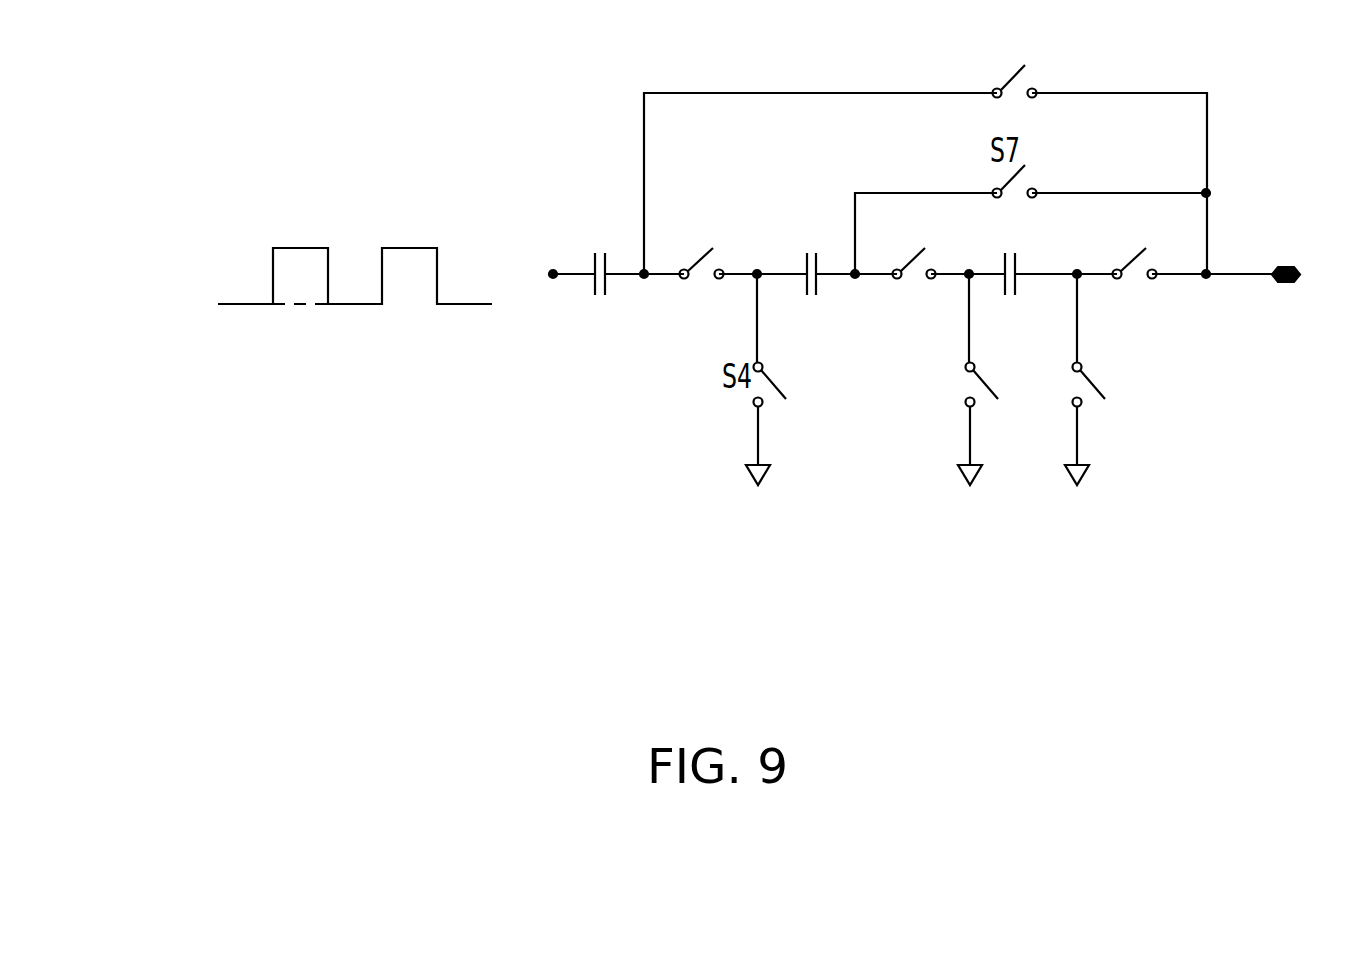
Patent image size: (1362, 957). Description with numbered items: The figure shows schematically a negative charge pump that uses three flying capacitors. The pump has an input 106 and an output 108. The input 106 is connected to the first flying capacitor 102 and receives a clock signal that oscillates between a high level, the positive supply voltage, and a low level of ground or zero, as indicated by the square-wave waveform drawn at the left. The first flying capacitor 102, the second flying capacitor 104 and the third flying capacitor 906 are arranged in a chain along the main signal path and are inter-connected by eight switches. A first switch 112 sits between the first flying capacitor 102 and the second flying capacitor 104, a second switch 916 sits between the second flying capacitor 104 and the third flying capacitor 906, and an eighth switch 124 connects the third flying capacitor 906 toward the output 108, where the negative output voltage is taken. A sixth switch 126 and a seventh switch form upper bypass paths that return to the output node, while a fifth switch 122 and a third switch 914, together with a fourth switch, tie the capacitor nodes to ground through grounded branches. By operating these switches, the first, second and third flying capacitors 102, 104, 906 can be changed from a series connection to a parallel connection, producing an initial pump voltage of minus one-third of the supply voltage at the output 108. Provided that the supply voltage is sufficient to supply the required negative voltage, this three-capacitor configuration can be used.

The first flying capacitor C1 102 is at (596, 310).
The second flying capacitor C2 104 is at (811, 274).
The third flying capacitor C3 906 is at (1011, 274).
The input 106 is at (340, 284).
The output 108 is at (1285, 275).
The switch S1 112 is at (697, 264).
The switch S2 916 is at (908, 264).
The switch S8 124 is at (1130, 264).
The switch S6 126 is at (1013, 83).
The switch S5 122 is at (955, 421).
The switch S3 914 is at (1110, 423).